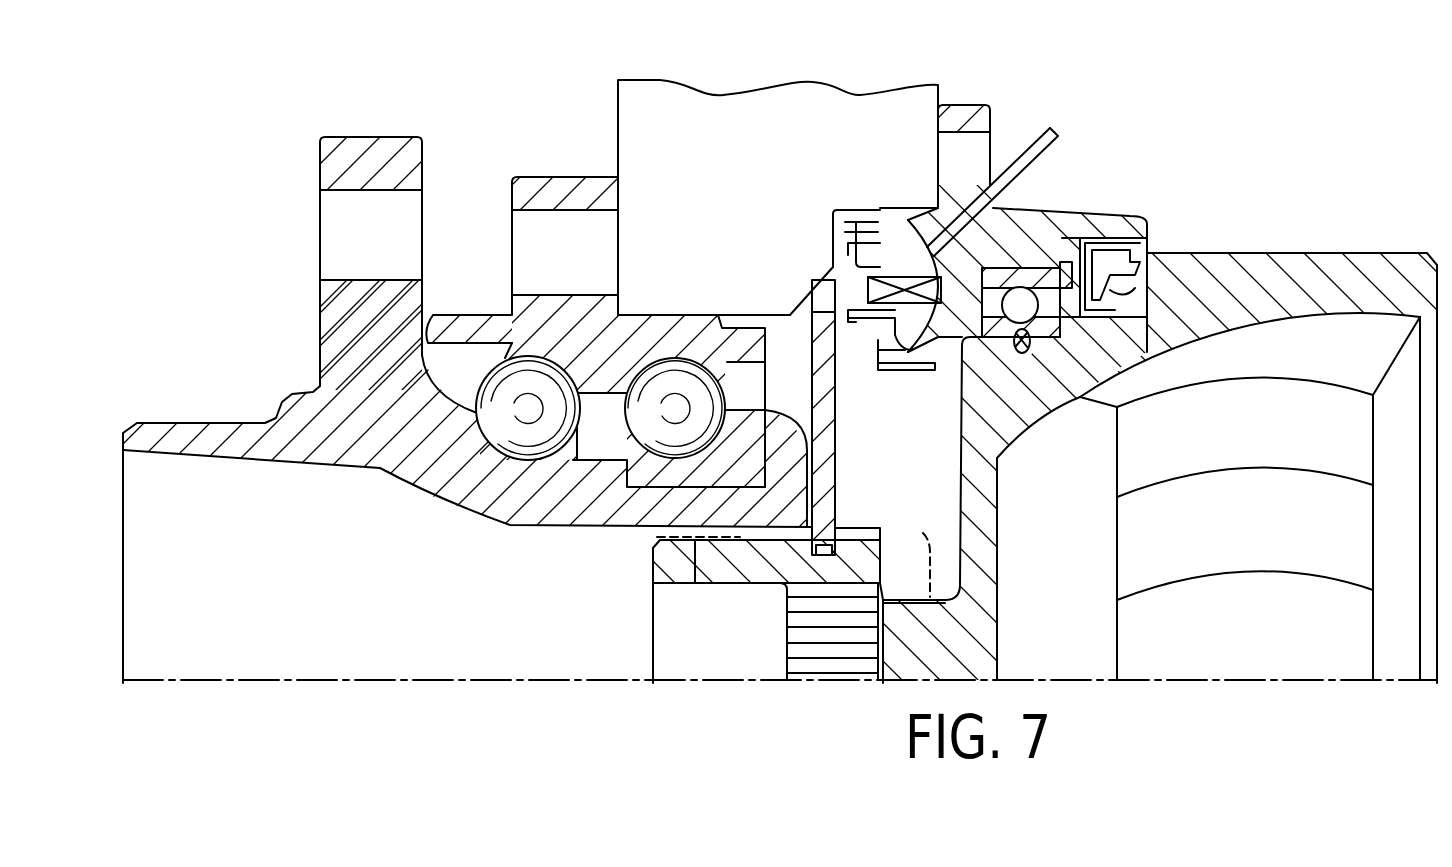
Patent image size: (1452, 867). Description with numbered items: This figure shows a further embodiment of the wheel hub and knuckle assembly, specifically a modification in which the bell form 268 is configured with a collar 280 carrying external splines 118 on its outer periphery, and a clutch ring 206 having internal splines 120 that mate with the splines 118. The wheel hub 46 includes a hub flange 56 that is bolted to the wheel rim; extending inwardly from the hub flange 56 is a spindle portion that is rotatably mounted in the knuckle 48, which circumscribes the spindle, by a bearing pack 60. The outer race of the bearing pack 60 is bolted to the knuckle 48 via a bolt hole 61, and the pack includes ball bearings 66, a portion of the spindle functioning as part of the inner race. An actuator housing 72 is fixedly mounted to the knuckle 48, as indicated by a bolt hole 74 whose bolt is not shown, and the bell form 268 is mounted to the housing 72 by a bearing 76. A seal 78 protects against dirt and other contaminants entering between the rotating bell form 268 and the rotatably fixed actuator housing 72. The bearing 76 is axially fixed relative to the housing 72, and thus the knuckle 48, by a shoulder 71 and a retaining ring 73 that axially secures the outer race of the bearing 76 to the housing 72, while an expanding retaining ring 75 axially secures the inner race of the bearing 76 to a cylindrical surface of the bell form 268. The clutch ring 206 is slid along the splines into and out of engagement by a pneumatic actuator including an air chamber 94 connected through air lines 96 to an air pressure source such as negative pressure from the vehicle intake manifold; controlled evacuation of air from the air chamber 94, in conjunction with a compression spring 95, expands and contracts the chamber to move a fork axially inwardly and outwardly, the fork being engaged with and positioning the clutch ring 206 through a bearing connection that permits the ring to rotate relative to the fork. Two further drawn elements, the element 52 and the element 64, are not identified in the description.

The wheel hub 46 is at (352, 455).
The knuckle 48 is at (636, 135).
The gear 52 is at (1296, 256).
The hub flange 56 is at (333, 314).
The bearing pack 60 is at (514, 148).
The bolt hole 61 is at (527, 252).
The outer race 64 is at (525, 326).
The ball bearings 66 is at (665, 405).
The shoulder 71 is at (1000, 280).
The actuator housing 72 is at (1000, 228).
The retaining ring 73 is at (1072, 248).
The bolt hole 74 is at (975, 100).
The expanding retaining ring 75 is at (1026, 350).
The bearing 76 is at (1058, 322).
The seal 78 is at (1126, 260).
The air chamber 94 is at (880, 265).
The compression spring 95 is at (855, 300).
The air lines 96 is at (1056, 130).
The external splines 118 is at (905, 597).
The internal splines 120 is at (835, 595).
The clutch ring 206 is at (746, 555).
The bell form 268 is at (1057, 367).
The collar 280 is at (975, 612).